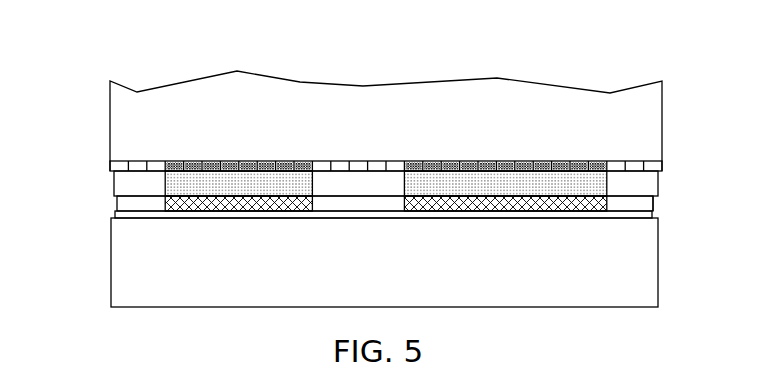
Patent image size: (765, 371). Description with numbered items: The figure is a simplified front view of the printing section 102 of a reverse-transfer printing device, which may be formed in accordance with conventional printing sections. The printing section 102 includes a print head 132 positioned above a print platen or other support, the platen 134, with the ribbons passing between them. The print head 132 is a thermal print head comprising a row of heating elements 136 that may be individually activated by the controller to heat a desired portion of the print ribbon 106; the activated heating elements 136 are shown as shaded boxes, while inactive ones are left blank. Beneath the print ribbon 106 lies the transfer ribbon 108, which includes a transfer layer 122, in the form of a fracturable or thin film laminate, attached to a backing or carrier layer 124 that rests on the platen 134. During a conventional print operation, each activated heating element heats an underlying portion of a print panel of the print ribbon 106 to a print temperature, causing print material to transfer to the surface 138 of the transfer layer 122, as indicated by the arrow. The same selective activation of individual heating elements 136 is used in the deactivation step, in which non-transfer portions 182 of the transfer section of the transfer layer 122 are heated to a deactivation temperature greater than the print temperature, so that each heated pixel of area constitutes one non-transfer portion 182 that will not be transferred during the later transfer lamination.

The printing section 102 is at (94, 42).
The print head 132 is at (200, 92).
The heating elements 136 is at (118, 165).
The surface 138 is at (529, 177).
The print ribbon 106 is at (118, 185).
The transfer ribbon 108 is at (119, 204).
The non-transfer portions 182 is at (194, 207).
The transfer layer 122 is at (645, 203).
The carrier layer 124 is at (335, 213).
The platen 134 is at (118, 283).